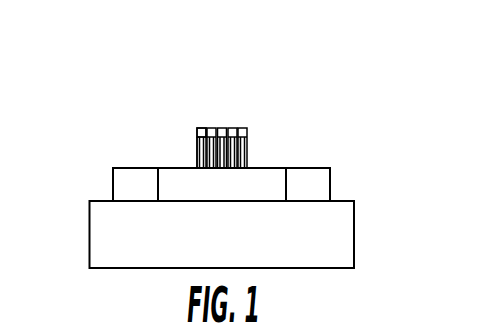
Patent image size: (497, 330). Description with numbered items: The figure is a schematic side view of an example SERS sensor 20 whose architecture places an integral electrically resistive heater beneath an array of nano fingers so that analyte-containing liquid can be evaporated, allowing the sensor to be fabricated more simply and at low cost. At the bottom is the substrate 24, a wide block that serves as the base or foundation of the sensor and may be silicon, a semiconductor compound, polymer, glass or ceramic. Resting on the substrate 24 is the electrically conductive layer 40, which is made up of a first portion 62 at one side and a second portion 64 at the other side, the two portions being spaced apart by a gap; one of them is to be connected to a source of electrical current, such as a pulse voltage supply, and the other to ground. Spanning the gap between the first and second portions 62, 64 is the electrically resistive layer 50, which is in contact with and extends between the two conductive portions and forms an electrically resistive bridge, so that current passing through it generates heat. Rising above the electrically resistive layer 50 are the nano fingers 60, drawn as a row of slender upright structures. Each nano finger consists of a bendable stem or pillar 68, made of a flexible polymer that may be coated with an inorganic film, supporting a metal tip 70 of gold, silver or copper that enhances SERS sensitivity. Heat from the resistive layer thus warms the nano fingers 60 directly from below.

The SERS sensor 20 is at (252, 80).
The substrate 24 is at (356, 232).
The electrically conductive layer 40 is at (108, 186).
The electrically resistive layer 50 is at (270, 170).
The nano fingers 60 is at (252, 130).
The first portion 62 is at (131, 172).
The second portion 64 is at (318, 173).
The pillar 68 is at (197, 153).
The metal tip 70 is at (201, 127).